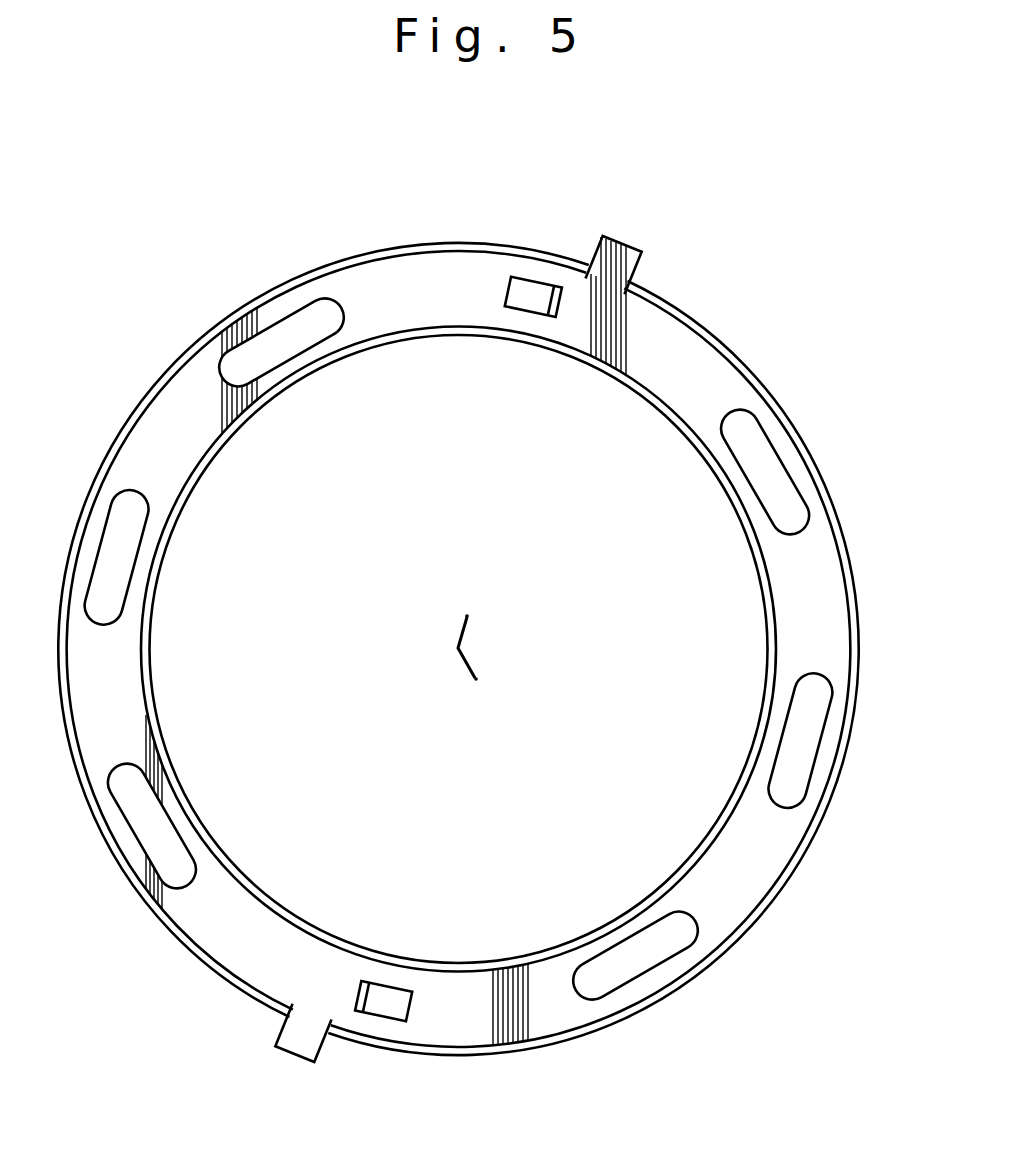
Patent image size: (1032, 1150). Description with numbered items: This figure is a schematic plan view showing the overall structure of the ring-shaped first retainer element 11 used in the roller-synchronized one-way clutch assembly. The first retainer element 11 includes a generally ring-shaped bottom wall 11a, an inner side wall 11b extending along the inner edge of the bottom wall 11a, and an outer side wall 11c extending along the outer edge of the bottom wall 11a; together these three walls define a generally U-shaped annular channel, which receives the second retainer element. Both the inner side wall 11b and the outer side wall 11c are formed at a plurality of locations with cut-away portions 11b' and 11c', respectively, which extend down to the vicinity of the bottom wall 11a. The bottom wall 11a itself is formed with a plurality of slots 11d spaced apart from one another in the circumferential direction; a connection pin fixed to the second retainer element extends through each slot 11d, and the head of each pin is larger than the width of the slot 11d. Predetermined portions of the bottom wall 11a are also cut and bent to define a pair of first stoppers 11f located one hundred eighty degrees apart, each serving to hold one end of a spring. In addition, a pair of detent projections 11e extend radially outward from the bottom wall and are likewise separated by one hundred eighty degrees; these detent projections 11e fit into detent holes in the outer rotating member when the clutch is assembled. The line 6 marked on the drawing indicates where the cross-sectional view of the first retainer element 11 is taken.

The first retainer element 11 is at (805, 418).
The bottom wall 11a is at (836, 568).
The inner side wall 11b is at (458, 649).
The cut-away portions 11b' is at (459, 650).
The outer side wall 11c is at (484, 644).
The cut-away portions 11c' is at (494, 634).
The slots 11d is at (322, 345).
The detent projections 11e is at (632, 262).
The first stoppers 11f is at (545, 318).
The line 6— 6 is at (565, 232).